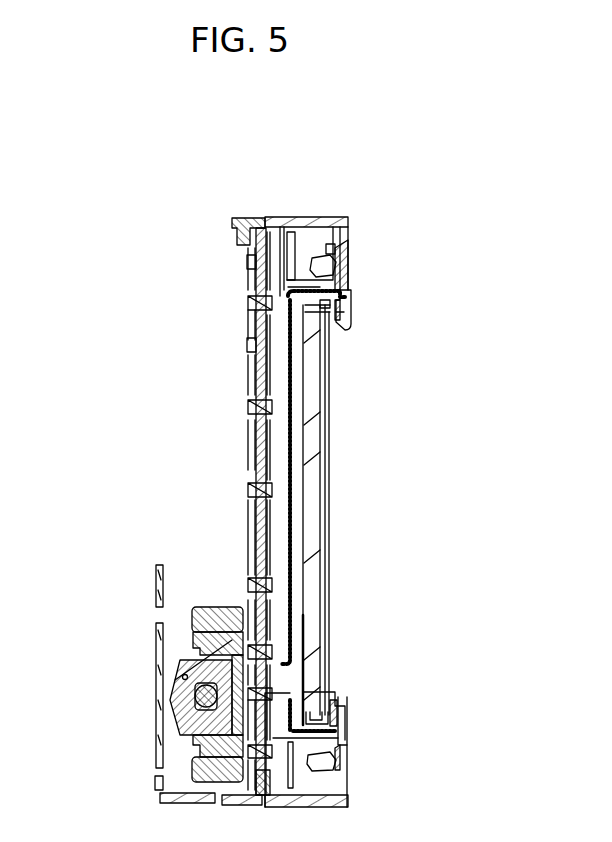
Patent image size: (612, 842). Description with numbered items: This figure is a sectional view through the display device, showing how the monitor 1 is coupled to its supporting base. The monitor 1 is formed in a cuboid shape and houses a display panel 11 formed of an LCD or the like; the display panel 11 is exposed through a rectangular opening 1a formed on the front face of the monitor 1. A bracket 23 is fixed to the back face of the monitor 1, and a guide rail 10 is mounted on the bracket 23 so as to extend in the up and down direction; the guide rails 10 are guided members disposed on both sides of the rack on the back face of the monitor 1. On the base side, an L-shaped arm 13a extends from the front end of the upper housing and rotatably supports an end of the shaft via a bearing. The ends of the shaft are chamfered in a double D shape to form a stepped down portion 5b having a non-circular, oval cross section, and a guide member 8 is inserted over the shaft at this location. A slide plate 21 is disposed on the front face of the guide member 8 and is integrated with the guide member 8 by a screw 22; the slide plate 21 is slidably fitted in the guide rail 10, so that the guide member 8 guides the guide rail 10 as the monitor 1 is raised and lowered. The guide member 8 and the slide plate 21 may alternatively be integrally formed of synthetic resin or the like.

The monitor 1 is at (327, 253).
The rectangular opening 1a is at (338, 320).
The bracket 23 is at (242, 223).
The guide rail 10 is at (251, 446).
The display panel 11 is at (315, 463).
The slide plate 21 is at (245, 700).
The L-shaped arm 13a is at (157, 657).
The guide member 8 is at (200, 662).
The stepped down portion 5b is at (203, 697).
The screw 22 is at (210, 630).